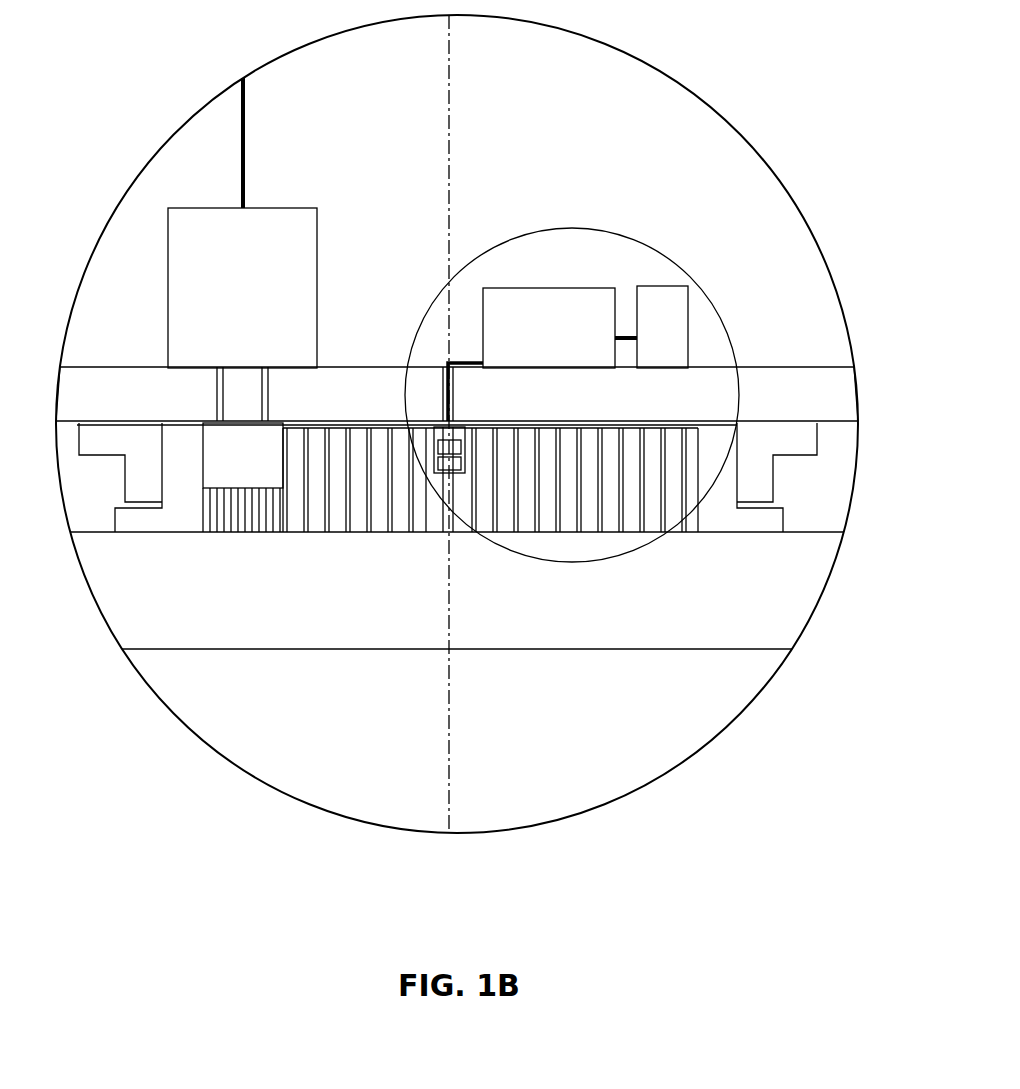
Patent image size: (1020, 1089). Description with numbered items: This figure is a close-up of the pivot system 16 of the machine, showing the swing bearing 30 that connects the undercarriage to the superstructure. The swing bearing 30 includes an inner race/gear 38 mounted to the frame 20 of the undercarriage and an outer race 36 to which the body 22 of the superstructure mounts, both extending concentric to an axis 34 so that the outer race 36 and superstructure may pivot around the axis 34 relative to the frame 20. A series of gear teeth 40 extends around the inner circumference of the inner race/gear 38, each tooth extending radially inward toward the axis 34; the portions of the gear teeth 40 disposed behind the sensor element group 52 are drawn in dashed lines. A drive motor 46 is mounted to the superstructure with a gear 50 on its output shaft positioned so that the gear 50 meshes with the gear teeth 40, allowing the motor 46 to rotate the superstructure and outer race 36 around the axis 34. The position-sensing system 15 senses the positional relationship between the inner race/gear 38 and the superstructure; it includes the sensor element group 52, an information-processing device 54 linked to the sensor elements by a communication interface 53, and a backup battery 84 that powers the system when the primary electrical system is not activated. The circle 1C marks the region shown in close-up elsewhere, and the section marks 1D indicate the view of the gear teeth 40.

The position-sensing system 15 is at (562, 262).
The pivot system 16 is at (106, 489).
The circle 1C is at (685, 272).
The section 1D is at (76, 425).
The frame 20 is at (555, 649).
The body 22 is at (828, 367).
The swing bearing 30 is at (828, 498).
The axis 34 is at (448, 677).
The outer race 36 is at (770, 443).
The inner race/gear 38 is at (722, 518).
The gear teeth 40 is at (425, 507).
The drive motor 46 is at (242, 223).
The gear 50 is at (243, 477).
The sensor element group 52 is at (470, 422).
The communication interface 53 is at (445, 383).
The information-processing device 54 is at (560, 328).
The backup battery 84 is at (662, 327).